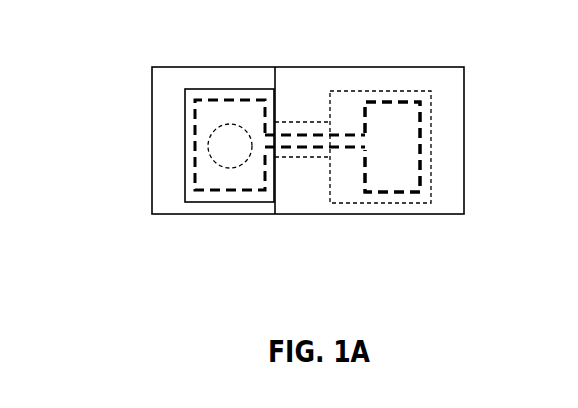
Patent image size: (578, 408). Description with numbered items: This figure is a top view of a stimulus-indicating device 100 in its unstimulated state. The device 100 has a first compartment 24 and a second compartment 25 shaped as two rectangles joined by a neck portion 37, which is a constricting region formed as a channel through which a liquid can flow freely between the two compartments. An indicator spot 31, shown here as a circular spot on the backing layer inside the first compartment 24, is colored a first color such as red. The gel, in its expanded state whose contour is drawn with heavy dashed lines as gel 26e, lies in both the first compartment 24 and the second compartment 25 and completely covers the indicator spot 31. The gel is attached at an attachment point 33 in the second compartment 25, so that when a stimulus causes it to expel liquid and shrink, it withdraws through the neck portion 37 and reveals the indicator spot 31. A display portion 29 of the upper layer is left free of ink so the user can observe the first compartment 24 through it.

The stimulus-indicating device 100 is at (473, 76).
The display portion 29 is at (167, 93).
The first compartment 24 is at (217, 211).
The indicator spot 31 is at (221, 148).
The gel in expanded state 26e is at (384, 174).
The attachment point 33 is at (431, 144).
The neck portion 37 is at (297, 167).
The second compartment 25 is at (375, 213).